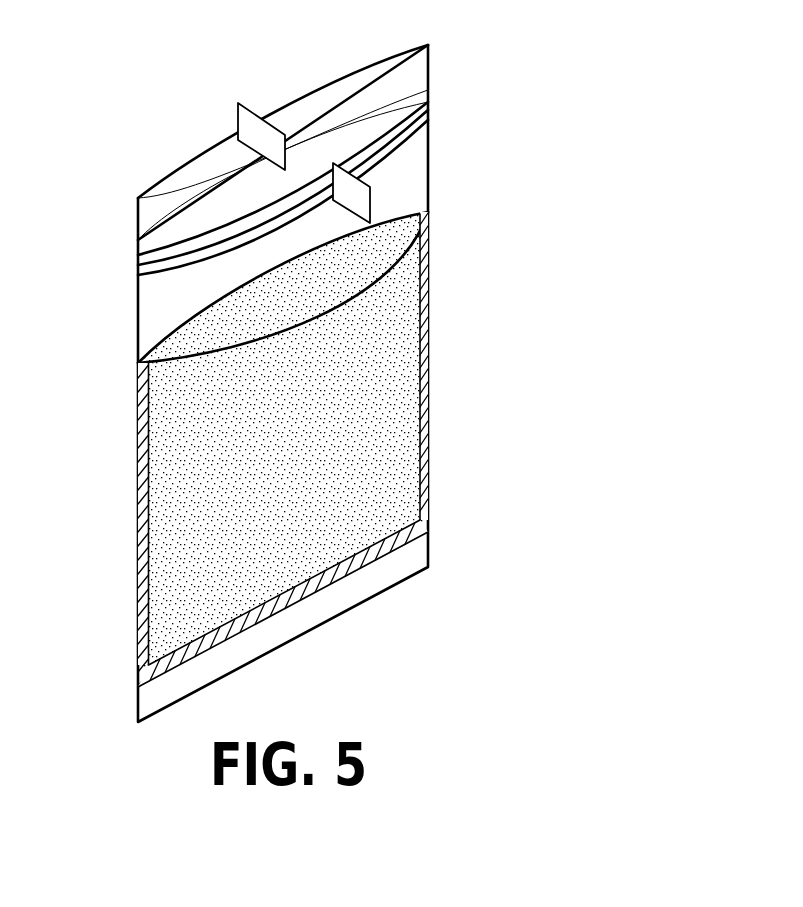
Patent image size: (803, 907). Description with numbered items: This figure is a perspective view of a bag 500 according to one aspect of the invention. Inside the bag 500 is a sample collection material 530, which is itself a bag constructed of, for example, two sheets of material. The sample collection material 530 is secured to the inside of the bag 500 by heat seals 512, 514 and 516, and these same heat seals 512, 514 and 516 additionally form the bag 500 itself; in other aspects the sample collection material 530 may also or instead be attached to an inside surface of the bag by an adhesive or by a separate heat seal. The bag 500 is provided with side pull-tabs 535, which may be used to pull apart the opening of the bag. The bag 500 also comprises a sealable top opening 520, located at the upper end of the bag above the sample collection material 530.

The bag 500 is at (576, 221).
The heat seal 512 is at (430, 526).
The heat seal 514 is at (429, 314).
The heat seal 516 is at (138, 525).
The sealable top opening 520 is at (429, 107).
The sample collection material 530 is at (338, 398).
The side pull-tab 535 is at (257, 125).